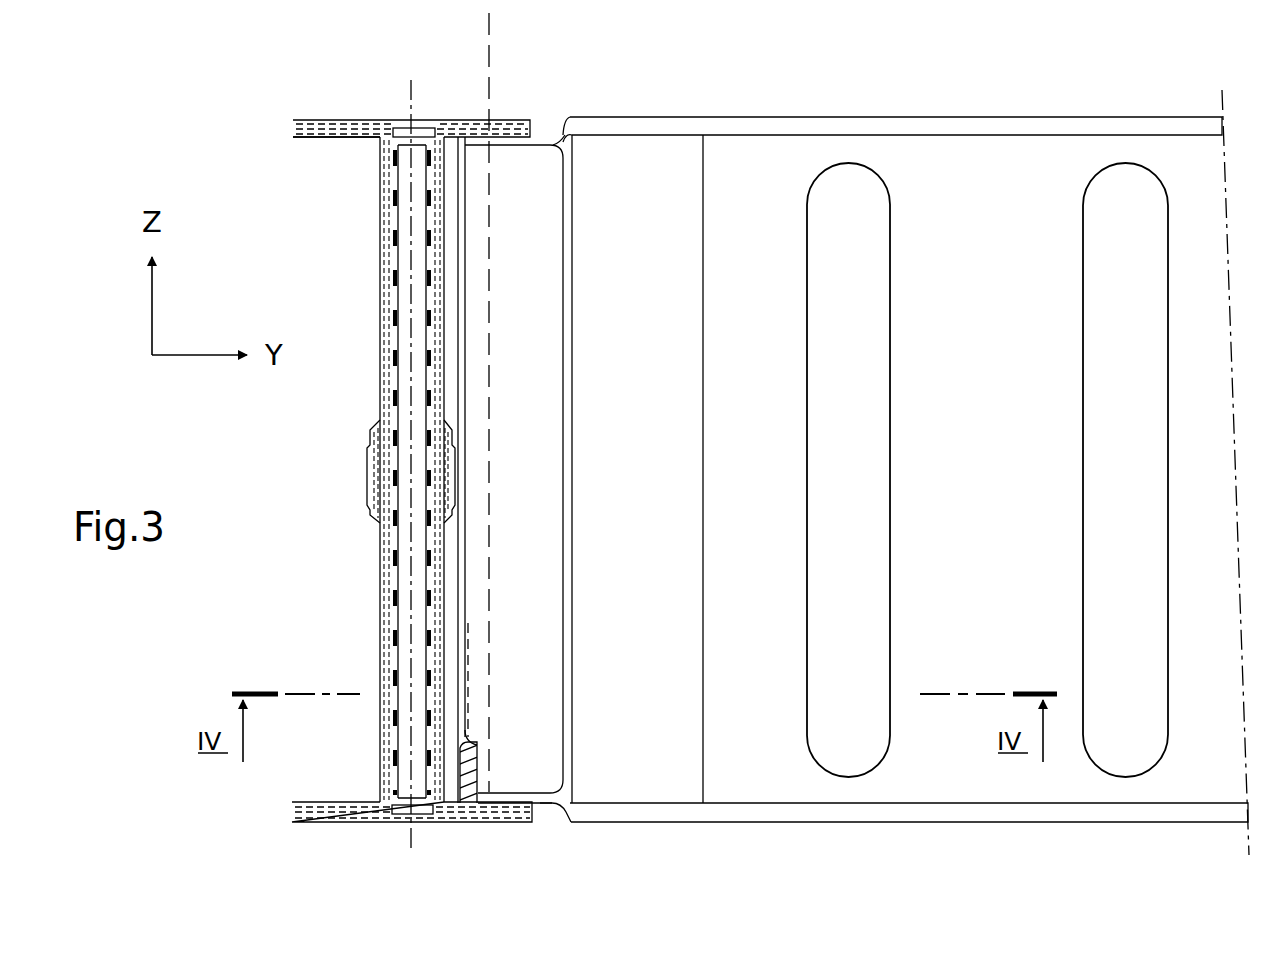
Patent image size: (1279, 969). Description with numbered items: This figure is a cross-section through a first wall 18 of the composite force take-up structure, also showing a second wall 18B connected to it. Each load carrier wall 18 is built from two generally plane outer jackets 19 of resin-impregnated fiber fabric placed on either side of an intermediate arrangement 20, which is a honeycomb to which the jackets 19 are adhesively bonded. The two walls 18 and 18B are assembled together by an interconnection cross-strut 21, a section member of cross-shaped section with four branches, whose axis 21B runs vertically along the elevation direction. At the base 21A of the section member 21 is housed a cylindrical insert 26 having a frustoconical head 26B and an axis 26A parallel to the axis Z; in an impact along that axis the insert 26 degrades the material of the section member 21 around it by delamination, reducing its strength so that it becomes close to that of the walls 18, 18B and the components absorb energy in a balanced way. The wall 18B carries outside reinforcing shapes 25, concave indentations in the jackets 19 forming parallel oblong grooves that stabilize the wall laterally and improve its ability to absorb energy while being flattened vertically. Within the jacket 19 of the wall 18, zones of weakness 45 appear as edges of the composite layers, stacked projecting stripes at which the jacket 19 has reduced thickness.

The load carrier wall 18 is at (446, 833).
The second wall 18B is at (820, 833).
The outer jacket 19 is at (382, 547).
The intermediate arrangement 20 is at (426, 674).
The interconnection cross-strut 21 is at (565, 478).
The base of the section member 21A is at (545, 806).
The axis of the section member 21B is at (490, 44).
The reinforcing shape 25 is at (862, 403).
The cylindrical insert 26 is at (470, 772).
The axis of the insert 26A is at (470, 655).
The frustoconical head 26B is at (469, 734).
The zone of weakness 45 is at (378, 722).